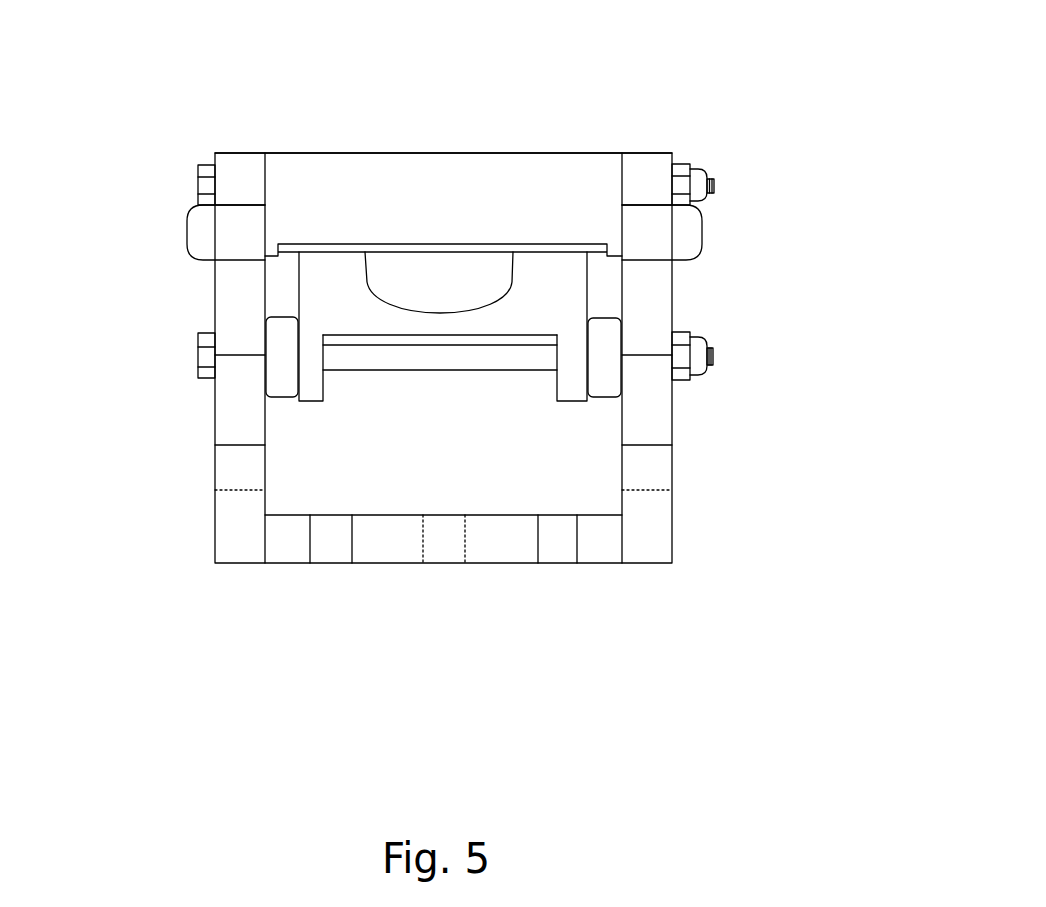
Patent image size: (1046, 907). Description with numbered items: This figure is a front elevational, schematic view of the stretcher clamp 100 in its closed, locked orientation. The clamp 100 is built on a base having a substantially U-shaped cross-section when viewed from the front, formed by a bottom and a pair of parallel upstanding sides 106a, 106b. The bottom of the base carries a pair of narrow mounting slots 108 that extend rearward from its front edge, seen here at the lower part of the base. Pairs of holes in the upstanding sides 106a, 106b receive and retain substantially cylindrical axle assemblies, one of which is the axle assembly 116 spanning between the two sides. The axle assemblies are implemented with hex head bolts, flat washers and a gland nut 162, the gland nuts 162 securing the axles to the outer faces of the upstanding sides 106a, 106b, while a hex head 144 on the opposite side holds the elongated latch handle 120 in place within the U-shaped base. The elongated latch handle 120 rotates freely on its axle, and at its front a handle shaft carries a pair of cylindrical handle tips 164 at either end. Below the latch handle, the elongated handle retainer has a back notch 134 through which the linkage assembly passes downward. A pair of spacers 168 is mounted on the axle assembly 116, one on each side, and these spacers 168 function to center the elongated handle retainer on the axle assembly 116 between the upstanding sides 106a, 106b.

The clamp 100 is at (667, 83).
The upstanding side 106a is at (215, 407).
The upstanding side 106b is at (673, 510).
The mounting slots 108 is at (563, 553).
The axle assembly 116 is at (427, 357).
The elongated latch handle 120 is at (447, 187).
The back notch 134 is at (447, 274).
The hex head 144 is at (198, 185).
The gland nut 162 is at (692, 163).
The cylindrical handle tips 164 is at (655, 238).
The spacers 168 is at (282, 368).